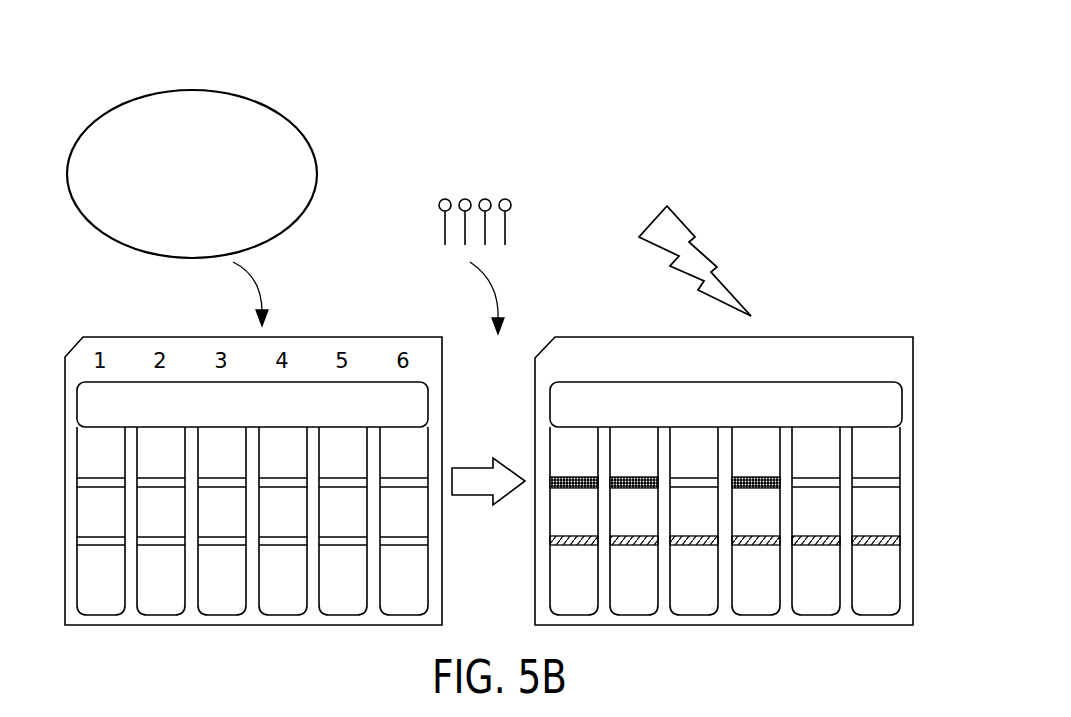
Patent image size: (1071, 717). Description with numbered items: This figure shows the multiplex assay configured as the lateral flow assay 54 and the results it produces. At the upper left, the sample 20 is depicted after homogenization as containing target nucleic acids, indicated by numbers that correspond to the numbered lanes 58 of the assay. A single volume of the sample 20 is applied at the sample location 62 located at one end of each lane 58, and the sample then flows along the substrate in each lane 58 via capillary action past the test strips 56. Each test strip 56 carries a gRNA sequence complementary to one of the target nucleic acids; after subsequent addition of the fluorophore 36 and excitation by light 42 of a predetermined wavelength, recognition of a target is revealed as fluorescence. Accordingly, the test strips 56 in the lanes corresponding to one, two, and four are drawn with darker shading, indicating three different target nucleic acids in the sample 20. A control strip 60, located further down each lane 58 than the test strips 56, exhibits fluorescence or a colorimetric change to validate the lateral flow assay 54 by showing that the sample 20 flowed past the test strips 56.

The sample 20 is at (260, 102).
The fluorophore 36 is at (473, 160).
The light 42 is at (699, 191).
The lateral flow assay 54 is at (704, 353).
The test strips 56 is at (552, 480).
The lanes 58 is at (584, 462).
The control strip 60 is at (552, 542).
The sample location 62 is at (735, 414).